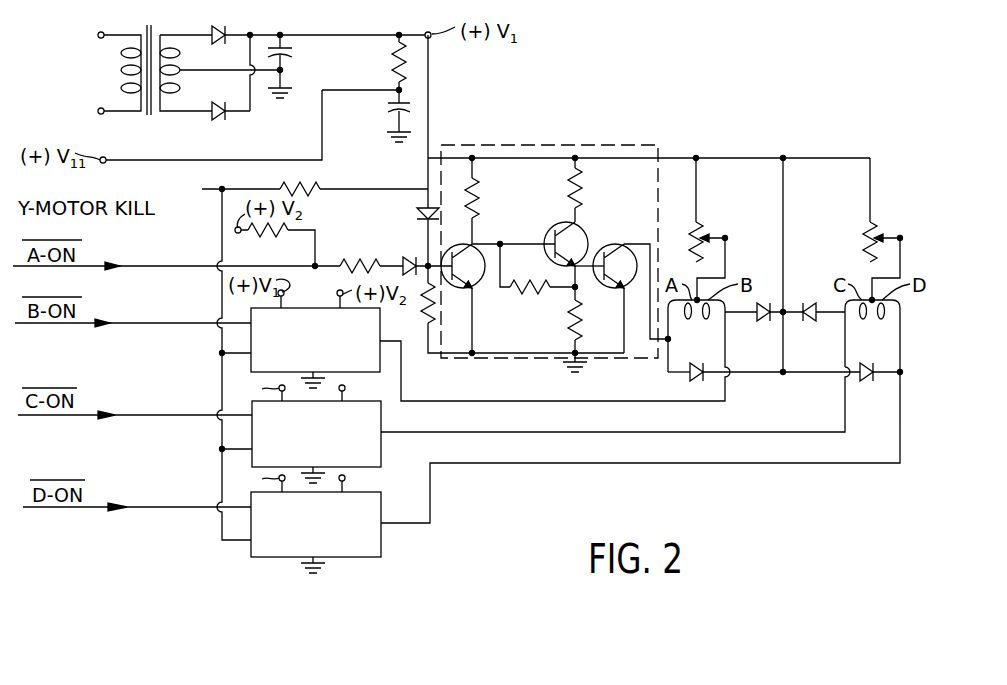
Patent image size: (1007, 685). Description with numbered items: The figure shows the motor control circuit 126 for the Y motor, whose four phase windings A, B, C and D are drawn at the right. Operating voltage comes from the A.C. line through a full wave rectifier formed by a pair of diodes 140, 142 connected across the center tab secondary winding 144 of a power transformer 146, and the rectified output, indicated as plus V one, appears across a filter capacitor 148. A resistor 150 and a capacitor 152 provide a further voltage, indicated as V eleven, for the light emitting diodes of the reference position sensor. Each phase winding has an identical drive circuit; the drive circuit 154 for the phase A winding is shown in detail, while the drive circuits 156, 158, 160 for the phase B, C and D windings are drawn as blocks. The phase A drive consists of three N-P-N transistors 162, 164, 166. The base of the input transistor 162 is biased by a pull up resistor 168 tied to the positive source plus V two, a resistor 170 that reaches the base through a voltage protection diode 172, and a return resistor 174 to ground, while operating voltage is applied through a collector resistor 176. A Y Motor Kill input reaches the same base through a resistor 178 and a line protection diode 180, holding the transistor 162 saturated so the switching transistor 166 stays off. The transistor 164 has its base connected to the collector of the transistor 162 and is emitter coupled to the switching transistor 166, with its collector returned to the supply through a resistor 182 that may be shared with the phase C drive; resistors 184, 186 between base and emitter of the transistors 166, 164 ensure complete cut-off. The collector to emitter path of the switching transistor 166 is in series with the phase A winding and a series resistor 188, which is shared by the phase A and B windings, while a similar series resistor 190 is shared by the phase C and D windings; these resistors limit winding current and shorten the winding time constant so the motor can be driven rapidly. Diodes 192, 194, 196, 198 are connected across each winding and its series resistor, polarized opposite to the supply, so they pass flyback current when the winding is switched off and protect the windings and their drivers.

The motor control circuit 126 is at (572, 104).
The diode 140 is at (234, 28).
The diode 142 is at (220, 116).
The center tab secondary winding 144 is at (180, 34).
The power transformer 146 is at (148, 118).
The filter capacitor 148 is at (298, 47).
The resistor 150 is at (390, 62).
The capacitor 152 is at (388, 106).
The phase A drive circuit 154 is at (530, 223).
The phase B drive circuit 156 is at (251, 339).
The phase C drive circuit 158 is at (252, 430).
The phase D drive circuit 160 is at (251, 521).
The input transistor 162 is at (478, 288).
The transistor 164 is at (572, 225).
The switching transistor 166 is at (606, 250).
The pull up resistor 168 is at (288, 240).
The resistor 170 is at (352, 262).
The voltage protection diode 172 is at (405, 264).
The resistor 174 is at (420, 332).
The collector resistor 176 is at (478, 192).
The resistor 178 is at (318, 189).
The line protection diode 180 is at (418, 214).
The resistor 182 is at (582, 190).
The resistor 184 is at (580, 308).
The resistor 186 is at (530, 297).
The series resistor 188 is at (698, 222).
The series resistor 190 is at (868, 222).
The diode 192 is at (720, 368).
The diode 194 is at (770, 322).
The diode 196 is at (815, 320).
The diode 198 is at (885, 350).